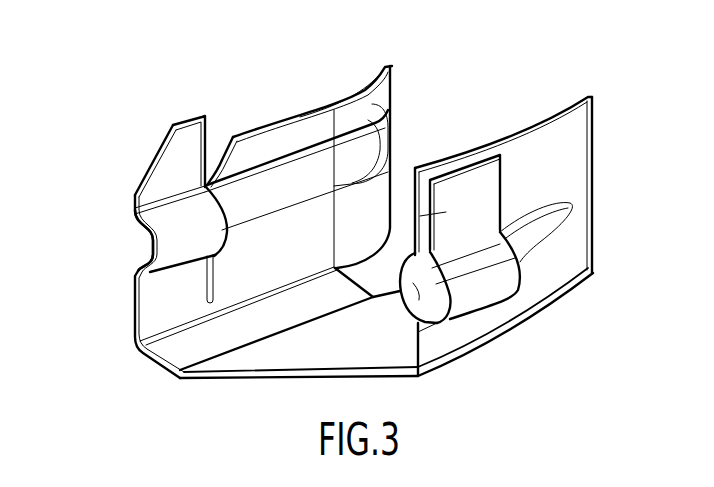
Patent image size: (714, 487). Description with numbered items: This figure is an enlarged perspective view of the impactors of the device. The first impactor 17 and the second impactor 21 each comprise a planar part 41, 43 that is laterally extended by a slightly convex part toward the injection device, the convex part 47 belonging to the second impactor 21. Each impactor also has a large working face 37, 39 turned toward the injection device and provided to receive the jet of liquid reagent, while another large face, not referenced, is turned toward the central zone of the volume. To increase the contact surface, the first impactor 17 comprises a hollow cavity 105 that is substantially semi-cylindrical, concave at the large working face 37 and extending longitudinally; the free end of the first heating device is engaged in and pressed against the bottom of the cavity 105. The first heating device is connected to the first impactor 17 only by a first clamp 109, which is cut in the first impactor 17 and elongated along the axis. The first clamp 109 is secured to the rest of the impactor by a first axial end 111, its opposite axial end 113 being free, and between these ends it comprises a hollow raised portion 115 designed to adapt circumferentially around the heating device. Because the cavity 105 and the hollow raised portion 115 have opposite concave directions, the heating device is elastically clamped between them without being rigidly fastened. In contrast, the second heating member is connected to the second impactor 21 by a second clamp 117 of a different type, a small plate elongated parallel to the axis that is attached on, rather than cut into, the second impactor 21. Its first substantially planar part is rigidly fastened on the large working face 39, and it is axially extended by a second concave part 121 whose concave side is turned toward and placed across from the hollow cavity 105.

The first impactor 17 is at (118, 190).
The second impactor 21 is at (564, 93).
The large working face 37 is at (304, 132).
The large working face 39 is at (565, 160).
The planar part 41 is at (231, 106).
The planar part 43 is at (373, 80).
The convex part 47 is at (552, 115).
The hollow cavity 105 is at (372, 137).
The first clamp 109 is at (142, 153).
The first axial end 111 is at (165, 314).
The opposite axial end 113 is at (190, 118).
The hollow raised portion 115 is at (150, 250).
The second clamp 117 is at (473, 146).
The second concave part 121 is at (492, 302).